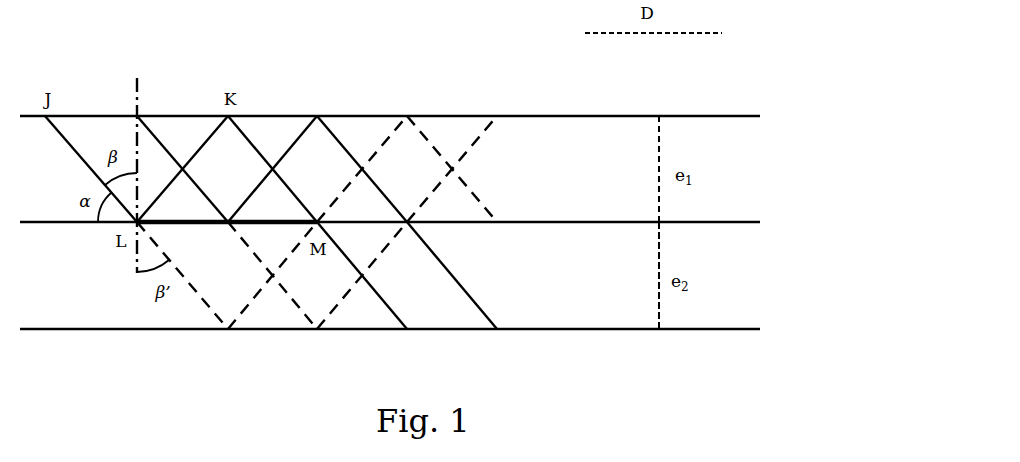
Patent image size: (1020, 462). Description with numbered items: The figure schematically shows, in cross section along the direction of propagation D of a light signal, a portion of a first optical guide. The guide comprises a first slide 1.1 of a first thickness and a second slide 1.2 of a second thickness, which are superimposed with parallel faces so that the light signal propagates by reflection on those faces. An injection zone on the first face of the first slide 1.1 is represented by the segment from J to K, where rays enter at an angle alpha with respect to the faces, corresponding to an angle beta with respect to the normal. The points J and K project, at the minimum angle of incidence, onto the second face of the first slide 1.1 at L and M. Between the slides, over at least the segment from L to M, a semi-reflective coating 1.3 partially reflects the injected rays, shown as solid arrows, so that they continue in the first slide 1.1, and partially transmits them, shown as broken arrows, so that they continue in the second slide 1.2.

The first slide 1.1 is at (592, 118).
The second slide 1.2 is at (604, 329).
The semi-reflective coating 1.3 is at (195, 226).